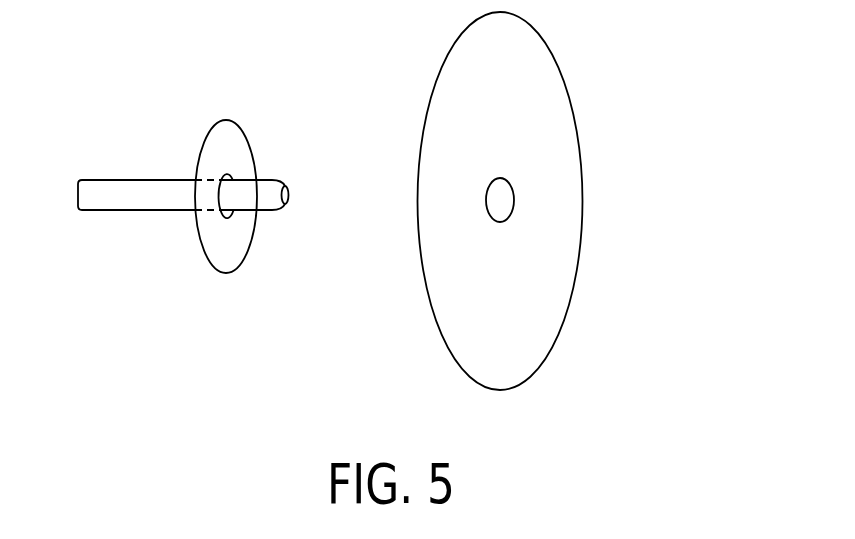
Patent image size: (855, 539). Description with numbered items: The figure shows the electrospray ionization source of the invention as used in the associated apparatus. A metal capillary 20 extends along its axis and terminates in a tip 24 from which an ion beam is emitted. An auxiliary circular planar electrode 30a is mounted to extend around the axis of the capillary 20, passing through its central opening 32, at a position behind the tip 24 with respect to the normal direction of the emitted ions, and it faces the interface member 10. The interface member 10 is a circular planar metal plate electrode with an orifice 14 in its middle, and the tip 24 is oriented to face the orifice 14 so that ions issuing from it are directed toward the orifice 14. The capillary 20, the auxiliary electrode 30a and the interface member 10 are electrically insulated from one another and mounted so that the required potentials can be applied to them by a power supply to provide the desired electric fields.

The metal capillary 20 is at (110, 178).
The tip 24 is at (287, 181).
The auxiliary circular planar electrode 30a is at (227, 273).
The central opening 32 is at (228, 217).
The interface member 10 is at (572, 290).
The orifice 14 is at (513, 202).